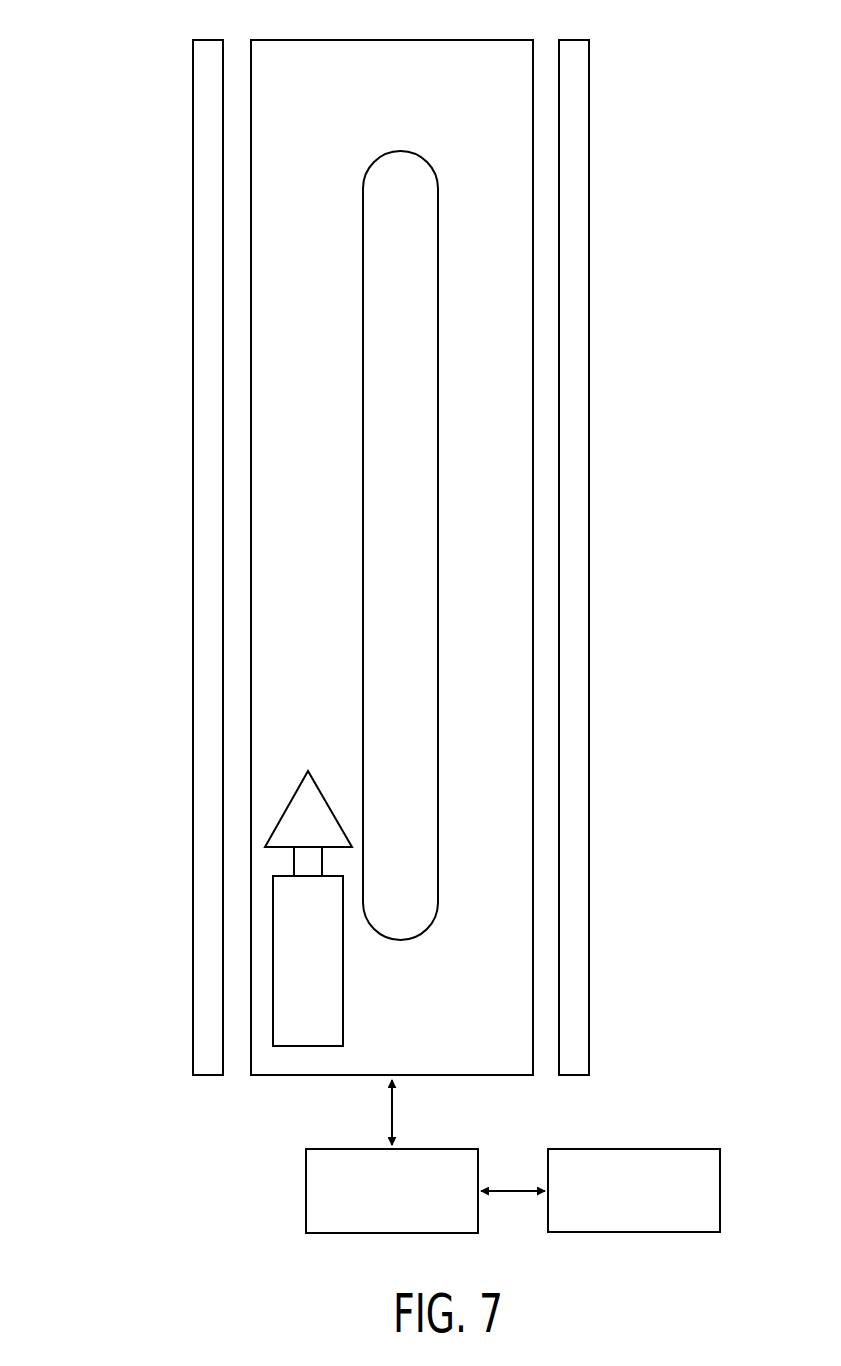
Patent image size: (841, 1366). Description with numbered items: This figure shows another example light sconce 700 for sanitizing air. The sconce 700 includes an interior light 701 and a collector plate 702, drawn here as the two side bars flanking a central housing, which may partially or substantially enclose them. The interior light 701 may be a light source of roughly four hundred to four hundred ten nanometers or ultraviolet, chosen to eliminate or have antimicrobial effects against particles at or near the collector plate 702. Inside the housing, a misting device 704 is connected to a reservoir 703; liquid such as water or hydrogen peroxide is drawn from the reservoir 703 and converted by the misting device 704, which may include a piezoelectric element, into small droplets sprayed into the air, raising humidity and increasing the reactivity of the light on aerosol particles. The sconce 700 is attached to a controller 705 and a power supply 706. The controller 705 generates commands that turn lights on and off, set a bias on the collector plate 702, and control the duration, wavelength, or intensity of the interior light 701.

The light sconce 700 is at (156, 30).
The interior light 701 is at (438, 195).
The collector plate 702 is at (193, 395).
The reservoir 703 is at (343, 960).
The misting device 704 is at (318, 789).
The controller 705 is at (306, 1188).
The power supply 706 is at (634, 1149).